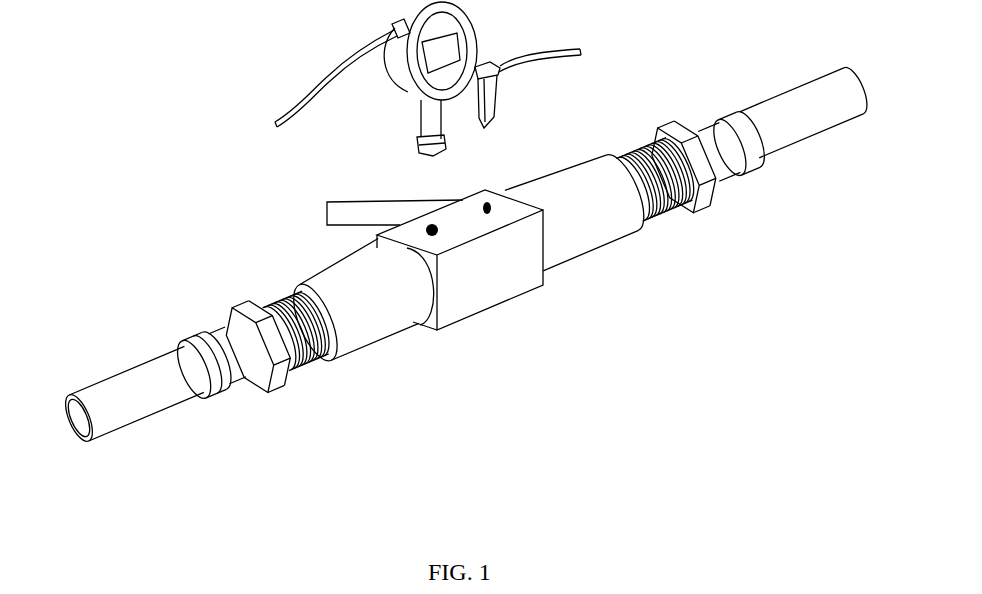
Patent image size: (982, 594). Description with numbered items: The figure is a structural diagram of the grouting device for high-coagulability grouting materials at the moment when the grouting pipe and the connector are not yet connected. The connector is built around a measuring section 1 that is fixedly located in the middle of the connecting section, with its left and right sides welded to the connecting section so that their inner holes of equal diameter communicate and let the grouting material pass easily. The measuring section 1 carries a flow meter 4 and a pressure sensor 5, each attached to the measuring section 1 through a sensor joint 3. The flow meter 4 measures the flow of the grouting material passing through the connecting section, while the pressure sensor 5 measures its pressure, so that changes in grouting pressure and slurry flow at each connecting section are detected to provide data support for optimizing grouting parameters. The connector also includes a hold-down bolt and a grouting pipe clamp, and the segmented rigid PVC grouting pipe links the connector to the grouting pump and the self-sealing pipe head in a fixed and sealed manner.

The measuring section 1 is at (491, 272).
The sensor joint 3 is at (327, 213).
The flow meter 4 is at (422, 118).
The pressure sensor 5 is at (490, 107).